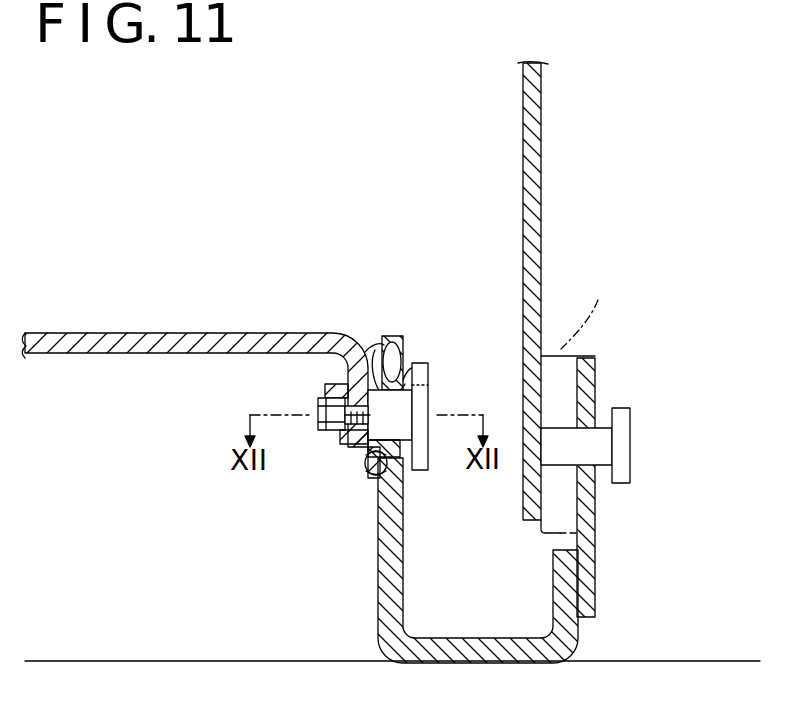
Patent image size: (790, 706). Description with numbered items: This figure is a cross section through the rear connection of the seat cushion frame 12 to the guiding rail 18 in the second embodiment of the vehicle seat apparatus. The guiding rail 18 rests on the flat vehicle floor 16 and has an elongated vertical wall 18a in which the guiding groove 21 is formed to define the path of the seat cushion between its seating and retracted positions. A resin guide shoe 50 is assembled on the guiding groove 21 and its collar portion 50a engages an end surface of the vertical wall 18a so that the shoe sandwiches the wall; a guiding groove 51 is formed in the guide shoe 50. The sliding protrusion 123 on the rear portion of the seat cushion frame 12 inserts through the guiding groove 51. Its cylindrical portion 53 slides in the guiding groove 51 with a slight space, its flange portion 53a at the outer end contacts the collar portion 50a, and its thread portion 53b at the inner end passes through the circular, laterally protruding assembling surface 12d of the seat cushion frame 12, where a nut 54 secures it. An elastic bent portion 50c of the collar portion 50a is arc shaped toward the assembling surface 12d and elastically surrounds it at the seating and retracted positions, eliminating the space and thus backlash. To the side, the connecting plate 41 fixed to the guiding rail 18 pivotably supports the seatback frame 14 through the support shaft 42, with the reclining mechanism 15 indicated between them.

The seat cushion frame 12 is at (172, 328).
The assembling surface 12d is at (372, 482).
The seatback frame 14 is at (541, 192).
The reclining mechanism 15 is at (587, 310).
The vehicle floor 16 is at (184, 678).
The guiding rail 18 is at (372, 558).
The vertical wall 18a is at (398, 578).
The guiding groove 21 is at (386, 360).
The connecting plate 41 is at (590, 540).
The support shaft 42 is at (618, 446).
The guide shoe 50 is at (378, 330).
The collar portion 50a is at (416, 372).
The elastic bent portion 50c is at (366, 354).
The guiding groove 51 is at (418, 448).
The cylindrical portion 53 is at (340, 434).
The flange portion 53a is at (430, 408).
The thread portion 53b is at (318, 412).
The nut 54 is at (344, 386).
The sliding protrusion 123 is at (428, 386).